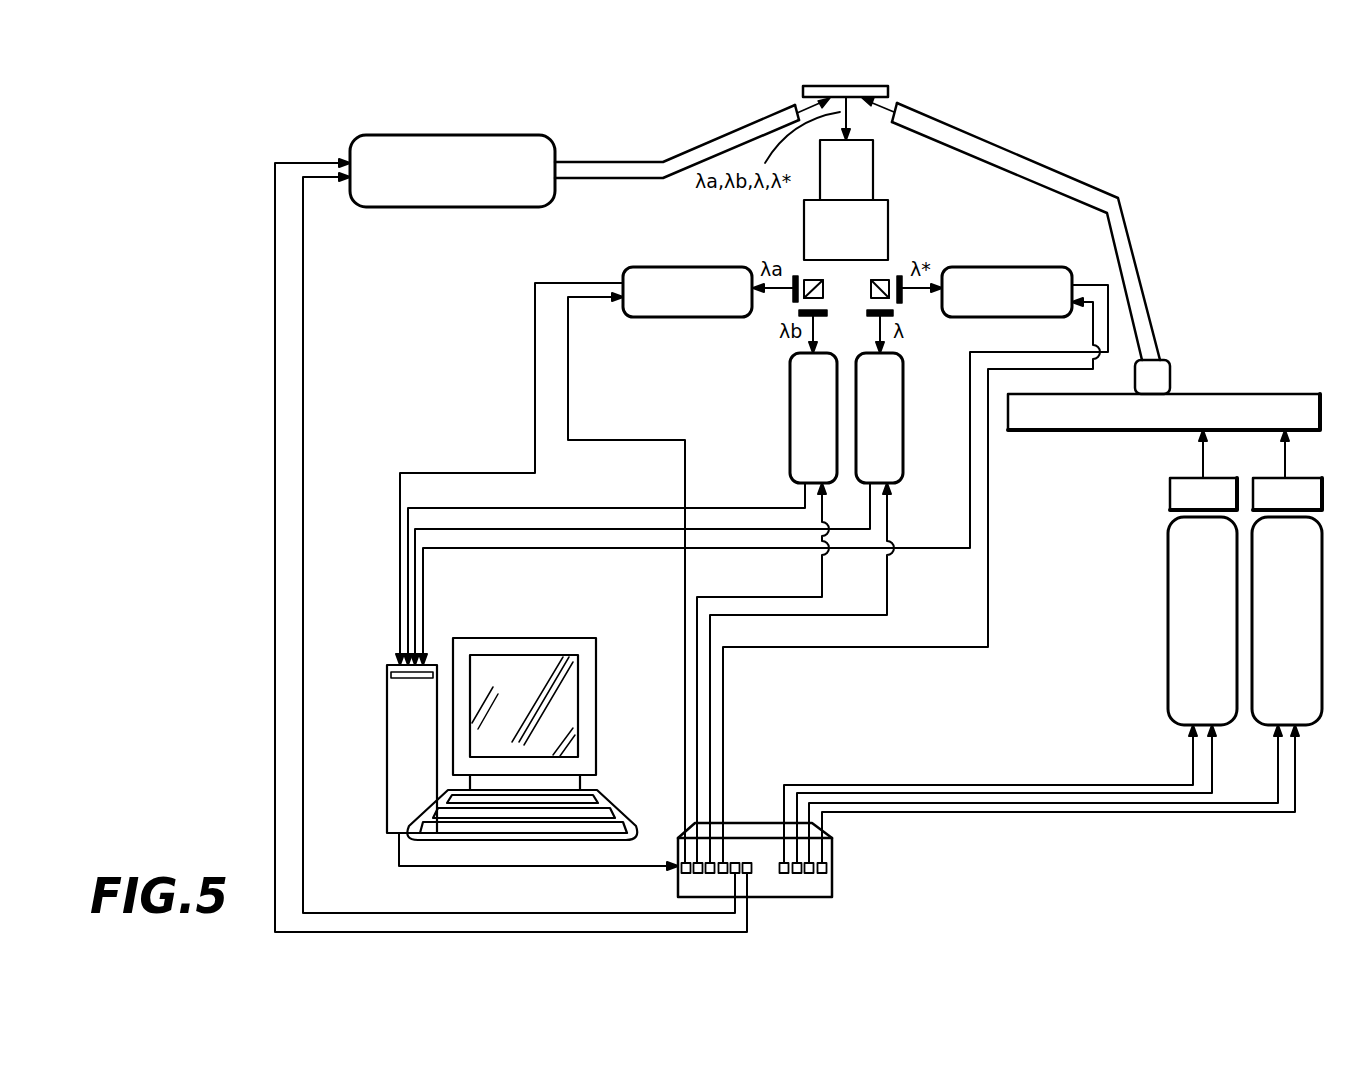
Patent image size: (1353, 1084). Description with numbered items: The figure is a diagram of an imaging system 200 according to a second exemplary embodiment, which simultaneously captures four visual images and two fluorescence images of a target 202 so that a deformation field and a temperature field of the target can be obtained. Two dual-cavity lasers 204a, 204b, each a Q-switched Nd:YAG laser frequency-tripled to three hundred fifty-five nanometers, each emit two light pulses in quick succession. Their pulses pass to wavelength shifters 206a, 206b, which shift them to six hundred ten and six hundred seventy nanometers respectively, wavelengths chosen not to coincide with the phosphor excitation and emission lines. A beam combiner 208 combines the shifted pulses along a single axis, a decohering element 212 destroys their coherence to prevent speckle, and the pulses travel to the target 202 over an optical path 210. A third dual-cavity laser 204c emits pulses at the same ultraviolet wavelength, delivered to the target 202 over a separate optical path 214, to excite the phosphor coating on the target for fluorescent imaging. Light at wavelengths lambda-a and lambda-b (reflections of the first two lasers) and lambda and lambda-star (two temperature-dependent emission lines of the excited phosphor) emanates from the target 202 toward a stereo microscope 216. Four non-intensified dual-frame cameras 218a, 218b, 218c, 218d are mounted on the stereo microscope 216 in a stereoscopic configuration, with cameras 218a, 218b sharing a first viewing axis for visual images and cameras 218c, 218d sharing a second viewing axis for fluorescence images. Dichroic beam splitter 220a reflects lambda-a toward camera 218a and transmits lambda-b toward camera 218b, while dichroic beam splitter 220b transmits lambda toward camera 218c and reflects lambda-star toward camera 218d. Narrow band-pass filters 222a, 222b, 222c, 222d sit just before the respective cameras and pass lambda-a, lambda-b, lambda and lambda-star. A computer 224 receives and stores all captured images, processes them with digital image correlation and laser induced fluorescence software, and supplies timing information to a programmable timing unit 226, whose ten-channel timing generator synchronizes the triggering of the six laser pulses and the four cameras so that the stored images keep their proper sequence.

The imaging system 200 is at (1212, 110).
The target 202 is at (853, 86).
The dual-cavity laser 204a is at (1185, 710).
The dual-cavity laser 204b is at (1268, 710).
The third dual-cavity laser 204c is at (430, 134).
The wavelength shifter 206a is at (1203, 494).
The wavelength shifter 206b is at (1287, 494).
The beam combiner 208 is at (1306, 393).
The optical path 210 is at (1131, 205).
The decohering element 212 is at (1172, 375).
The optical path 214 is at (631, 160).
The stereo microscope 216 is at (882, 201).
The dual-frame camera 218a is at (688, 266).
The dual-frame camera 218b is at (789, 430).
The dual-frame camera 218c is at (904, 430).
The dual-frame camera 218d is at (998, 266).
The dichroic beam splitter 220a is at (823, 293).
The dichroic beam splitter 220b is at (889, 300).
The narrow band-pass filter 222a is at (790, 276).
The narrow band-pass filter 222b is at (797, 313).
The narrow band-pass filter 222c is at (868, 313).
The narrow band-pass filter 222d is at (904, 276).
The computer 224 is at (413, 723).
The programmable timing unit 226 is at (834, 866).